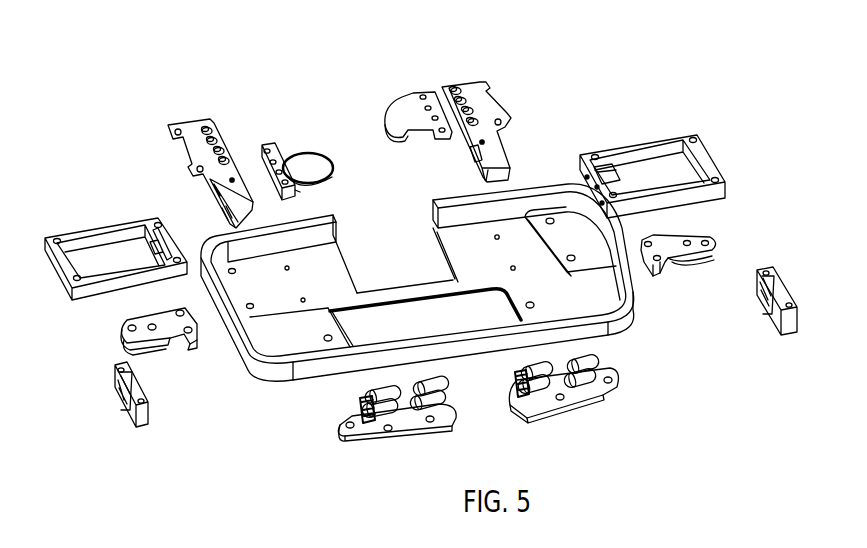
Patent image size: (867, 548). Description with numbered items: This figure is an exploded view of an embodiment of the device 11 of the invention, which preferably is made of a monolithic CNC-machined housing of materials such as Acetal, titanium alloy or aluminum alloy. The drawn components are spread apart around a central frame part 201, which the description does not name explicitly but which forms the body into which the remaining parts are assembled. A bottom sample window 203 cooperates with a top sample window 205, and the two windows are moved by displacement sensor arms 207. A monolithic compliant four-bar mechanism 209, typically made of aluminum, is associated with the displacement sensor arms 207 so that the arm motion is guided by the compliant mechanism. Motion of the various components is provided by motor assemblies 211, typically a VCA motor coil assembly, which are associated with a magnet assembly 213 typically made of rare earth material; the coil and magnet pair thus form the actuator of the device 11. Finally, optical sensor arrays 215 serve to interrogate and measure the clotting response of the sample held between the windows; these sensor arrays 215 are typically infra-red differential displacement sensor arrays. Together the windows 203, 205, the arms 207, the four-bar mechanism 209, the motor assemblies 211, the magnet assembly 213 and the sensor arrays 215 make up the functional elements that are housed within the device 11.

The device 11 is at (547, 93).
The frame 201 is at (325, 283).
The bottom sample window 203 is at (305, 136).
The top sample window 205 is at (393, 91).
The displacement sensor arms 207 is at (496, 92).
The monolithic compliant four-bar mechanism 209 is at (660, 139).
The motor assemblies 211 is at (114, 328).
The magnet assembly 213 is at (107, 403).
The optical sensor arrays 215 is at (392, 441).